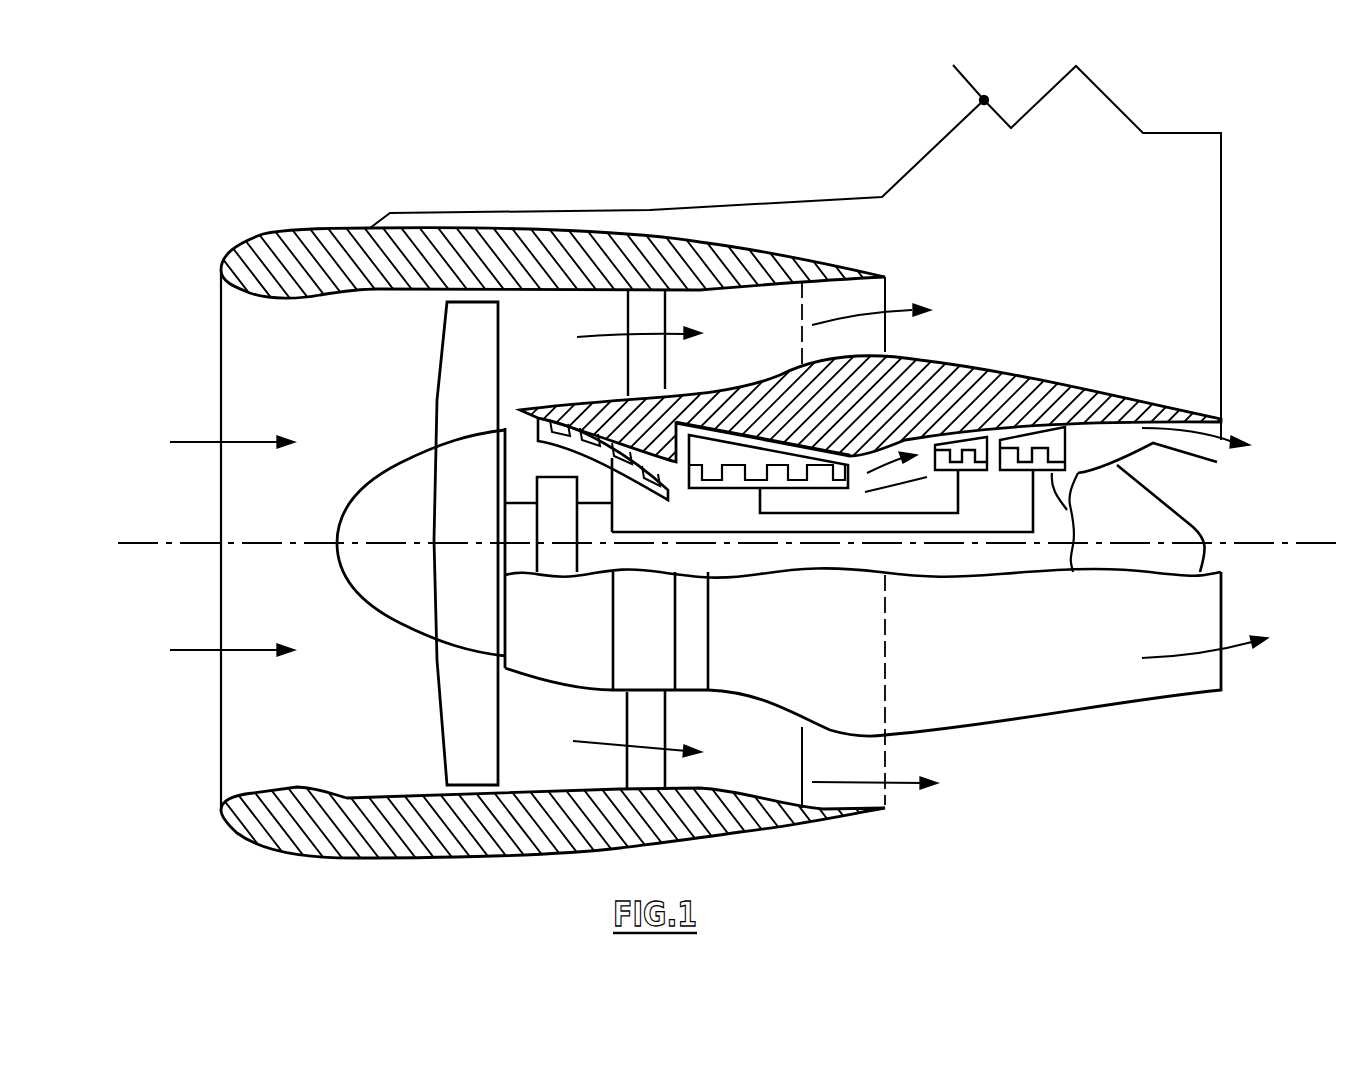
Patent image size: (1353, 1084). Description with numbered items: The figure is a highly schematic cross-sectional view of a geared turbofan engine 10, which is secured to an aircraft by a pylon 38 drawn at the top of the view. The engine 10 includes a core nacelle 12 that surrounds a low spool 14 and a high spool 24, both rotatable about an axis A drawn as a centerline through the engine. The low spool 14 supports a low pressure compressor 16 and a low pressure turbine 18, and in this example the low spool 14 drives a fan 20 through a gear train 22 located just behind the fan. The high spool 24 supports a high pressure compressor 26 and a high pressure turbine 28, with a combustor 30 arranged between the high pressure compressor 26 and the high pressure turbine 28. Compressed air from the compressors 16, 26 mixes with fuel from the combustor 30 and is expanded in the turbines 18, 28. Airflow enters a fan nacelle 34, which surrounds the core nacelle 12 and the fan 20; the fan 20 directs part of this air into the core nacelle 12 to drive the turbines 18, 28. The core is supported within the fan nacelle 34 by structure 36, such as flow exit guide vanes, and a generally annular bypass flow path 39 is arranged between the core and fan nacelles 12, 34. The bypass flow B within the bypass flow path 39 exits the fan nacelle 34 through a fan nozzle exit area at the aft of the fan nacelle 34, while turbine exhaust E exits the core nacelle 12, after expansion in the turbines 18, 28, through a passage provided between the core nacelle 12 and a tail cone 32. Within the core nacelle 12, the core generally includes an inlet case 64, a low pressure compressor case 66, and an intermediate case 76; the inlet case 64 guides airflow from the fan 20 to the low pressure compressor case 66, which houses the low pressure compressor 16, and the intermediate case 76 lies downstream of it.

The geared turbofan engine 10 is at (273, 175).
The core nacelle 12 is at (1040, 390).
The low spool 14 is at (828, 534).
The low pressure compressor 16 is at (645, 492).
The low pressure turbine 18 is at (1068, 510).
The fan 20 is at (432, 712).
The gear train 22 is at (553, 518).
The high spool 24 is at (805, 513).
The high pressure compressor 26 is at (743, 476).
The high pressure turbine 28 is at (978, 473).
The combustor 30 is at (903, 482).
The tail cone 32 is at (1157, 515).
The fan nacelle 34 is at (528, 265).
The structure 36 is at (646, 372).
The pylon 38 is at (1113, 118).
The bypass flow path 39 is at (768, 767).
The inlet case 64 is at (533, 663).
The low pressure compressor case 66 is at (648, 663).
The intermediate case 76 is at (695, 653).
The axis A is at (1283, 545).
The bypass flow B is at (603, 741).
The turbine exhaust E is at (1222, 647).